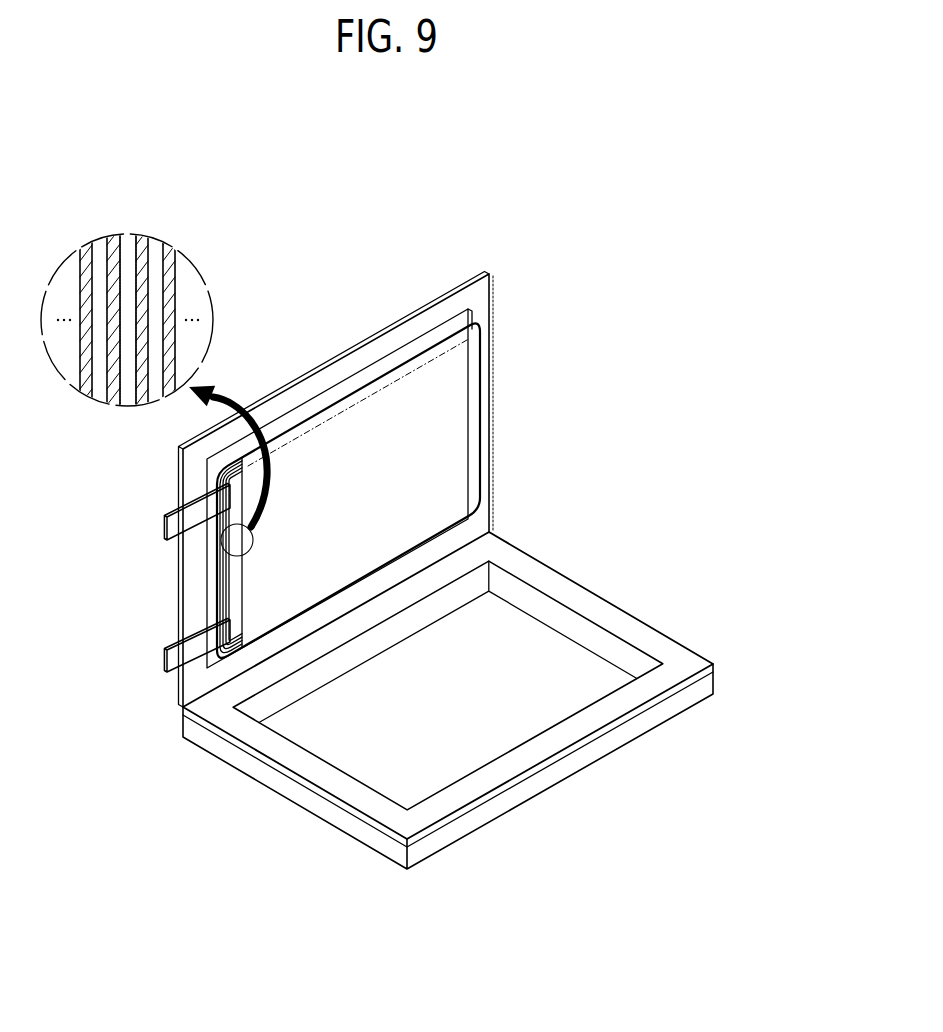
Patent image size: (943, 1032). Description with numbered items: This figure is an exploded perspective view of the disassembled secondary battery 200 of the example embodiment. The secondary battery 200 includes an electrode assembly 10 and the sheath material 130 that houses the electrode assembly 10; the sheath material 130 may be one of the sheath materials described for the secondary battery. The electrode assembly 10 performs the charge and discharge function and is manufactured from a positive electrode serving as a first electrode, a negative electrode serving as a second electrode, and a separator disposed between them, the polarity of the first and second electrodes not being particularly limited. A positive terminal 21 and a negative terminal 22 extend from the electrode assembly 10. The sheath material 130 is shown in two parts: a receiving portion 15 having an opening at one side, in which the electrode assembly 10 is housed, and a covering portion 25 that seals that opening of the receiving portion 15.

The secondary battery 200 is at (420, 166).
The electrode assembly 10 is at (496, 428).
The positive terminal 21 is at (164, 527).
The negative terminal 22 is at (164, 660).
The covering portion 25 is at (488, 488).
The receiving portion 15 is at (707, 681).
The sheath material for secondary battery 130 is at (664, 540).